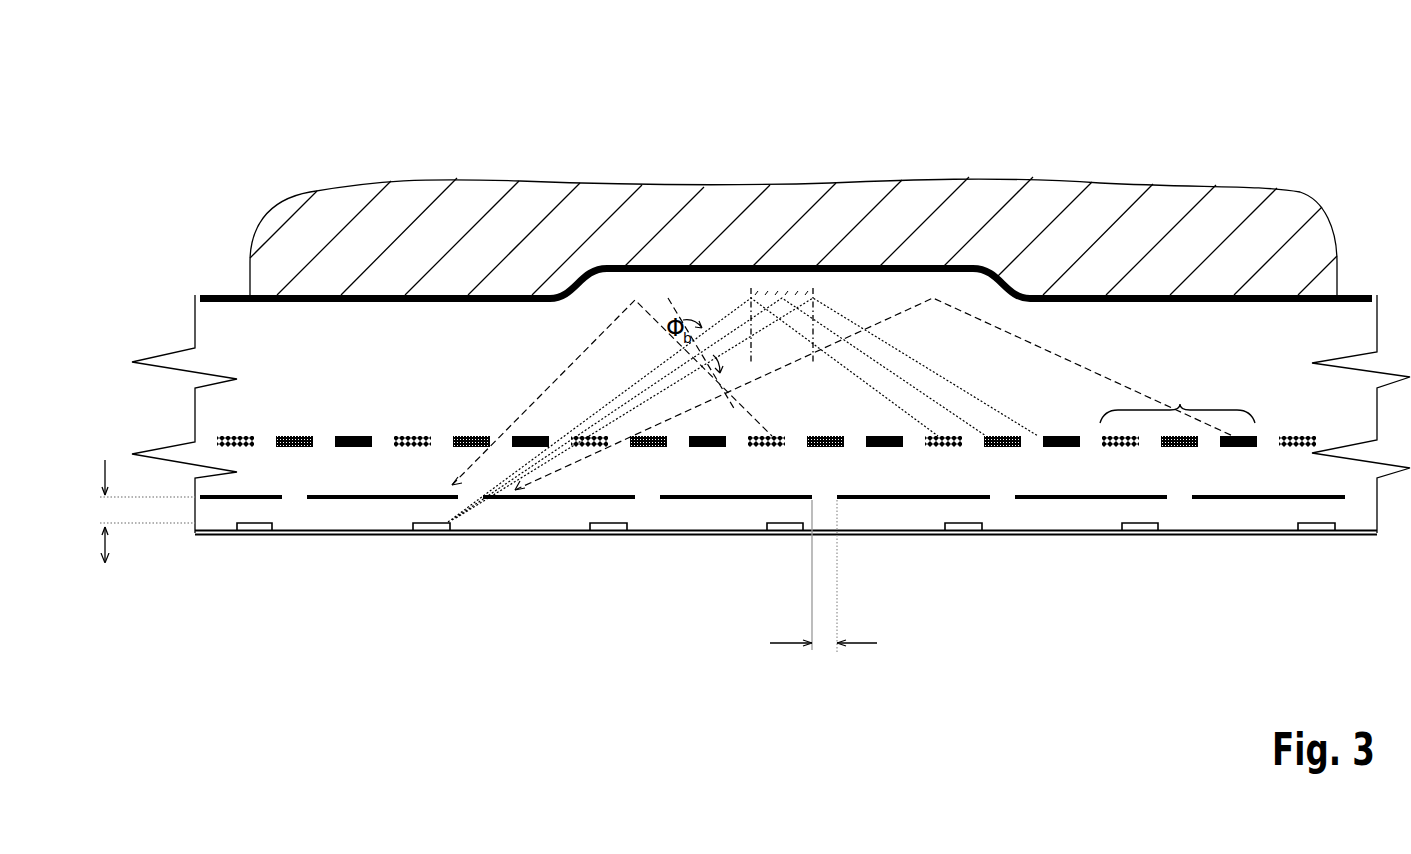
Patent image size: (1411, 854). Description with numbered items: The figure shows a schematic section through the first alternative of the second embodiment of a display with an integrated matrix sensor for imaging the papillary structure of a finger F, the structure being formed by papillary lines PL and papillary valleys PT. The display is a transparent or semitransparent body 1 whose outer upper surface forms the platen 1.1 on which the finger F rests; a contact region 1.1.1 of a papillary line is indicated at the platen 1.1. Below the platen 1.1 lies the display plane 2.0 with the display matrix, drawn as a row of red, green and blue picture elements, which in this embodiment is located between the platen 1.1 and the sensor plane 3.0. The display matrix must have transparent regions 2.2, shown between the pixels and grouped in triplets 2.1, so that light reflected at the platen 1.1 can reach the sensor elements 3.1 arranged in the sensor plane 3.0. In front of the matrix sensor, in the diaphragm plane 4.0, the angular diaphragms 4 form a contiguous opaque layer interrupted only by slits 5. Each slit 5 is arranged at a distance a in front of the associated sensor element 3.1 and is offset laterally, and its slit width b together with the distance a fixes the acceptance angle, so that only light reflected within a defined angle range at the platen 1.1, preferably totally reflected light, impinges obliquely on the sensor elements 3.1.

The transparent or semitransparent body 1 is at (242, 340).
The platen 1.1 is at (217, 296).
The contact area of papillary ridge 1.1.1 is at (782, 295).
The display plane 2.0 is at (232, 432).
The pixel group 2.1 is at (1180, 406).
The transparent regions 2.2 is at (1090, 443).
The sensor plane 3.0 is at (156, 524).
The sensor elements 3.1 is at (610, 530).
The angular diaphragms 4 is at (720, 499).
The diaphragm plane 4.0 is at (132, 495).
The slit 5 is at (1177, 499).
The finger F is at (1255, 252).
The papillary valleys PT is at (860, 263).
The papillary lines PL is at (1207, 294).
The distance a is at (139, 511).
The slit width b is at (823, 591).